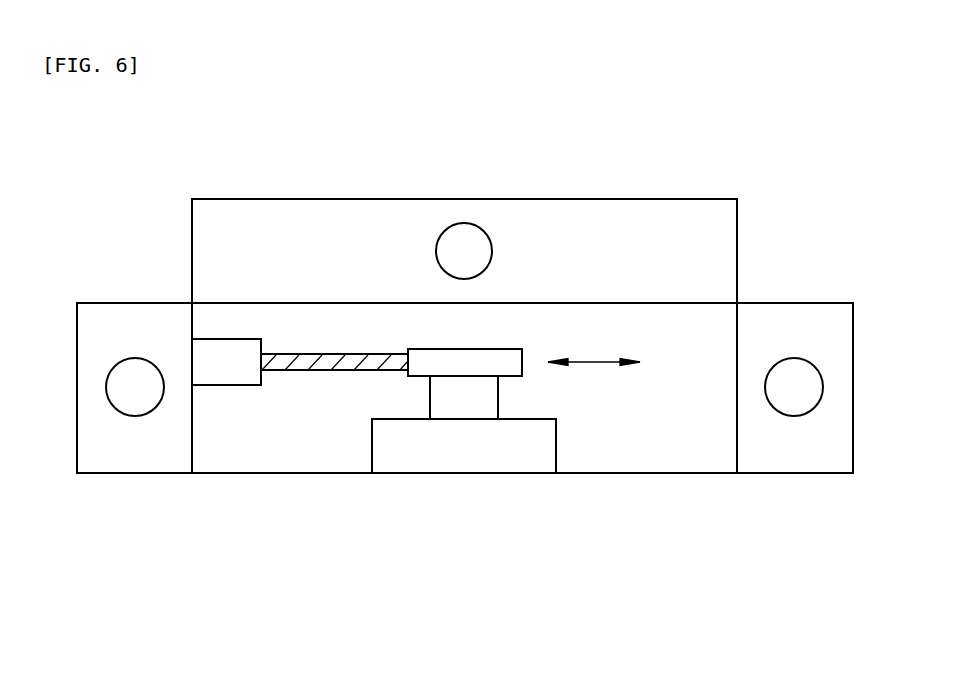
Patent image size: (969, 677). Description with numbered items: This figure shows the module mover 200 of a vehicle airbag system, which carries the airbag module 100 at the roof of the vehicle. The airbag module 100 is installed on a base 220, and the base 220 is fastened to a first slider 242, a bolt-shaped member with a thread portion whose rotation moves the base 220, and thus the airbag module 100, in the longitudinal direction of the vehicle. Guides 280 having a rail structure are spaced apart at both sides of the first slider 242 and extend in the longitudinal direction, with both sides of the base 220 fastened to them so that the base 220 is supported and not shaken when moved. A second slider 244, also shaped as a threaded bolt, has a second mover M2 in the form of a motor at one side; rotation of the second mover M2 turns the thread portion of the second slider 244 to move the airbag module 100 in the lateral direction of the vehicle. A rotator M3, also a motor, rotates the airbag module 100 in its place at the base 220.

The module mover 200 is at (745, 181).
The base 220 is at (707, 325).
The first slider 242 is at (463, 240).
The guides 280 is at (135, 388).
The second mover M2 is at (241, 368).
The second slider 244 is at (325, 365).
The rotator M3 is at (480, 408).
The airbag module 100 is at (402, 454).